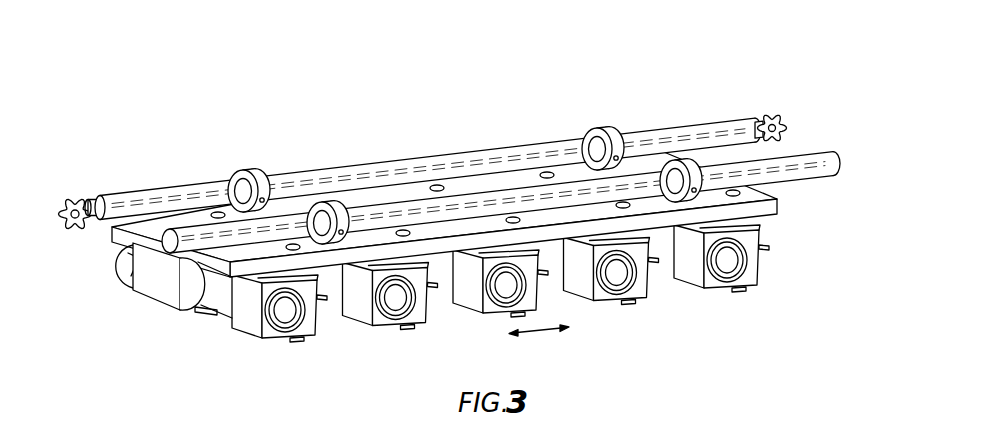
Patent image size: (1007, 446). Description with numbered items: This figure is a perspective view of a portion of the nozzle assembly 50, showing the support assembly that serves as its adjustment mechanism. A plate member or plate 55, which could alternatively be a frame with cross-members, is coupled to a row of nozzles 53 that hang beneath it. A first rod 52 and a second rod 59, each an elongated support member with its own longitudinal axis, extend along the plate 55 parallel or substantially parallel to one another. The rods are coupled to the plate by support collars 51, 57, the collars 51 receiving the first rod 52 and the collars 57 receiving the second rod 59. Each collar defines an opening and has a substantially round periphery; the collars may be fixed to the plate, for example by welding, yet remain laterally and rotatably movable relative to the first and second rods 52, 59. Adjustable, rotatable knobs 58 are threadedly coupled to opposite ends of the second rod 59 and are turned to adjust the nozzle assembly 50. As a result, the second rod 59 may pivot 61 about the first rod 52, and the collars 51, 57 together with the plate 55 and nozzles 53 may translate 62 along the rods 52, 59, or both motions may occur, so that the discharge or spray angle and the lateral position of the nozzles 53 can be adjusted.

The nozzle assembly 50 is at (503, 86).
The support collar 51 is at (333, 212).
The first rod 52 is at (829, 172).
The nozzle 53 is at (695, 276).
The plate member 55 is at (773, 205).
The support collar 57 is at (243, 170).
The knob 58 is at (73, 197).
The second rod 59 is at (161, 188).
The pivot 61 is at (75, 264).
The translate 62 is at (541, 333).